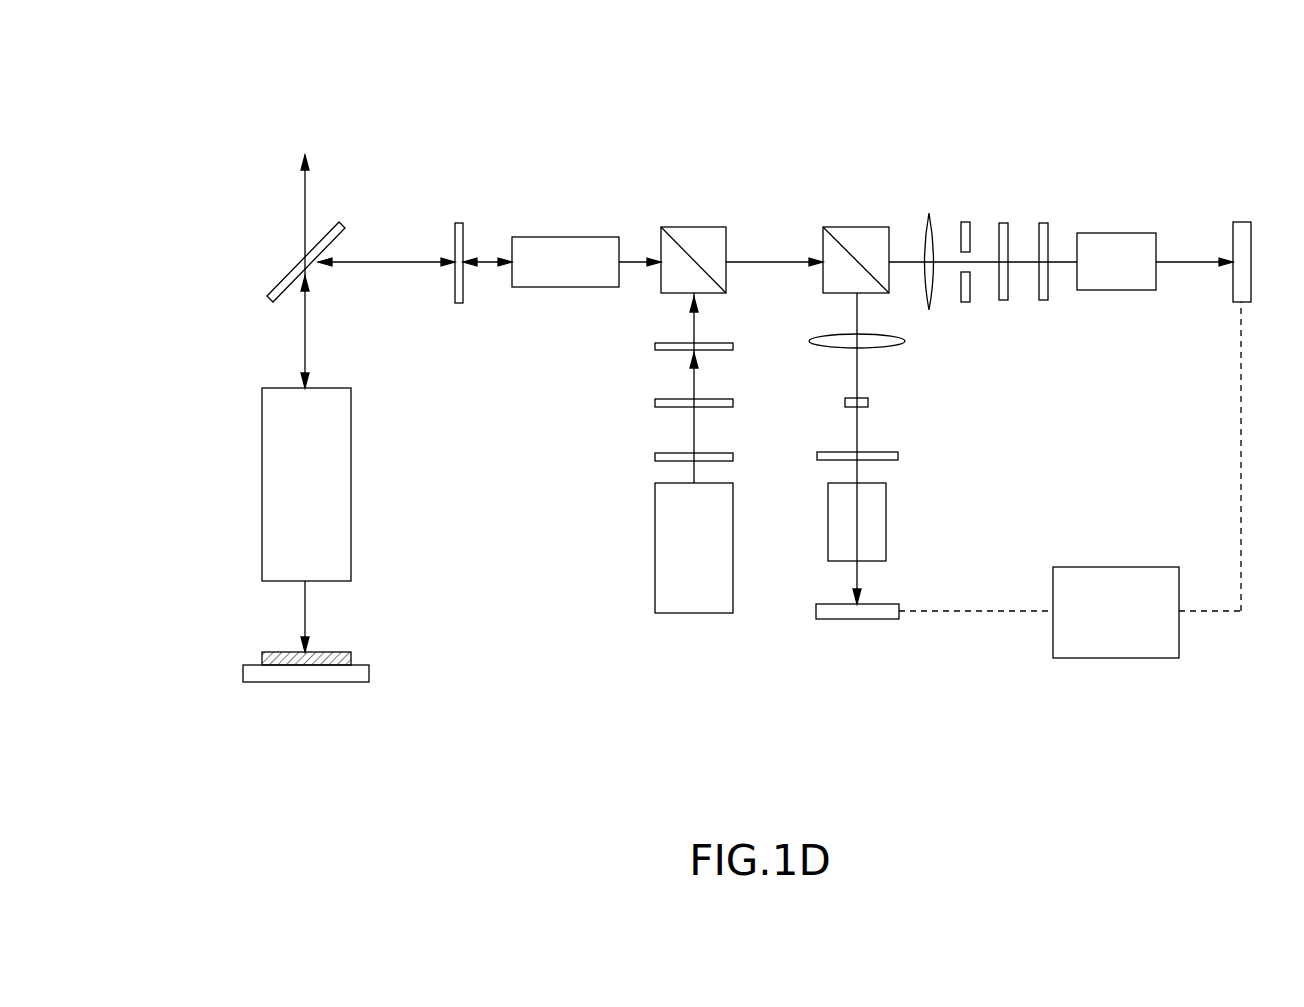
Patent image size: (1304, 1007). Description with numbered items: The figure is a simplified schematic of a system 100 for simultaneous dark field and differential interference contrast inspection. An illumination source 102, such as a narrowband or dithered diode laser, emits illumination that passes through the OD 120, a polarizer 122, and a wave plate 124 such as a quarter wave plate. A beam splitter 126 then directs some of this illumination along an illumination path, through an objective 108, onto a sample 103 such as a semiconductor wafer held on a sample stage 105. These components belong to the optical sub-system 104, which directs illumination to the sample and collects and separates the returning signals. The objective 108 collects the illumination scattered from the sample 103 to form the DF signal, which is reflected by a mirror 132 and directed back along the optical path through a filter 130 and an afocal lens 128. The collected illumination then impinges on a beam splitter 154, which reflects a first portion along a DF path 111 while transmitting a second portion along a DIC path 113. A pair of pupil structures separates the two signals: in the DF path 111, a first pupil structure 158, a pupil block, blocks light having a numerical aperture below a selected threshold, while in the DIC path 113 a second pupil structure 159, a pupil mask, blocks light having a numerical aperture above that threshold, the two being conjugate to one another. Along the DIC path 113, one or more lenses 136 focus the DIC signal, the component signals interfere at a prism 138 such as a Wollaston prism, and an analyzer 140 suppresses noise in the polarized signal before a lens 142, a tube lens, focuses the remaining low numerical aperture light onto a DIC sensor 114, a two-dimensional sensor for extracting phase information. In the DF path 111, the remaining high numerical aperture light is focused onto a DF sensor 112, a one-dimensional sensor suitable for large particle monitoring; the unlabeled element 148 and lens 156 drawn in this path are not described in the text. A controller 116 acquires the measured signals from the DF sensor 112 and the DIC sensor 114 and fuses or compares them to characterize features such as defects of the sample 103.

The system 100 is at (263, 56).
The illumination source 102 is at (694, 548).
The sample 103 is at (264, 655).
The optical sub-system 104 is at (541, 144).
The sample stage 105 is at (245, 672).
The objective 108 is at (306, 484).
The DF path 111 is at (937, 404).
The DF sensor 112 is at (838, 620).
The DIC path 113 is at (1022, 154).
The DIC sensor 114 is at (1242, 222).
The controller 116 is at (1116, 612).
The OD 120 is at (668, 462).
The polarizer 122 is at (668, 408).
The wave plate 124 is at (668, 351).
The beam splitter 126 is at (693, 227).
The afocal lens 128 is at (561, 237).
The filter 130 is at (458, 223).
The mirror 132 is at (290, 272).
The lens 136 is at (933, 222).
The prism 138 is at (1003, 300).
The analyzer 140 is at (1044, 223).
The lens 142 is at (1116, 290).
The optical element 148 is at (838, 461).
The beam splitter 154 is at (857, 227).
The lens 156 is at (838, 348).
The first pupil structure 158 is at (850, 408).
The second pupil structure 159 is at (962, 302).